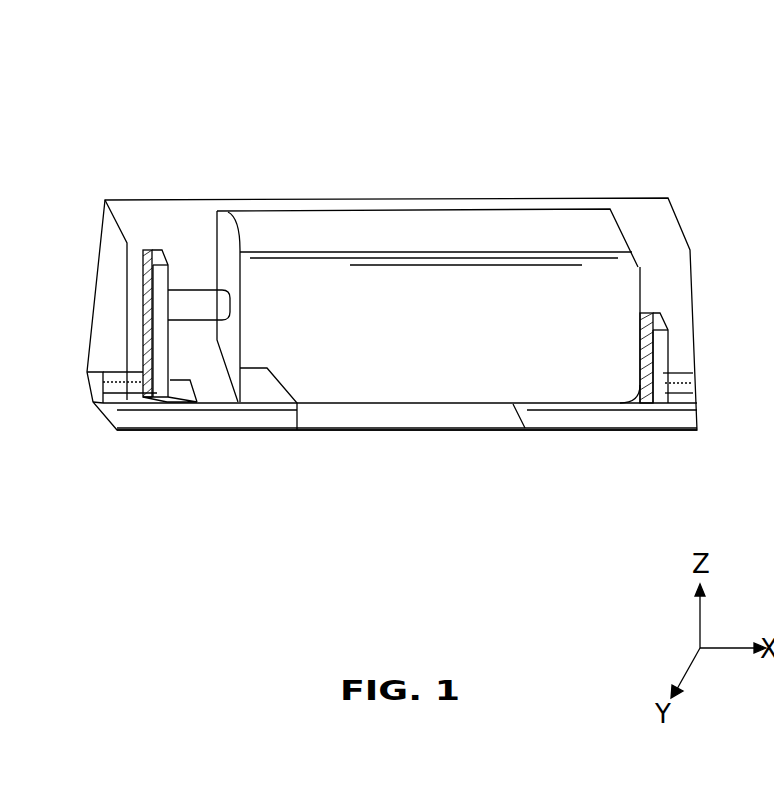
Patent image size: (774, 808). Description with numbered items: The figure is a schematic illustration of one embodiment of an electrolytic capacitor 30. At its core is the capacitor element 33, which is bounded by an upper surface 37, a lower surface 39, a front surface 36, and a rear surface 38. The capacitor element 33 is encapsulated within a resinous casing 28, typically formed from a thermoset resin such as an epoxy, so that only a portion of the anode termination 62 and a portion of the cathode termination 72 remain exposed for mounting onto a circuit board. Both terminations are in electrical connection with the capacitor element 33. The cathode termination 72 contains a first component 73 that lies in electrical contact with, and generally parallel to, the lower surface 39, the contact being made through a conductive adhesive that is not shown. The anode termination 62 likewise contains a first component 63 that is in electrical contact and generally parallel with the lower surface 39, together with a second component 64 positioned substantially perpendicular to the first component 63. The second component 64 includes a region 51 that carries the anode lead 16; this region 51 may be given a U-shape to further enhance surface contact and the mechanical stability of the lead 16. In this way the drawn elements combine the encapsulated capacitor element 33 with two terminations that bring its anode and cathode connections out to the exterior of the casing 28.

The electrolytic capacitor 30 is at (480, 168).
The resinous casing 28 is at (133, 215).
The front surface 36 is at (224, 243).
The upper surface 37 is at (502, 239).
The rear surface 38 is at (640, 280).
The capacitor element 33 is at (452, 347).
The second component 64 is at (152, 333).
The anode lead 16 is at (197, 312).
The region 51 is at (196, 278).
The lower surface 39 is at (413, 405).
The first component 73 is at (552, 418).
The cathode termination 72 is at (625, 431).
The anode termination 62 is at (196, 432).
The first component 63 is at (138, 420).